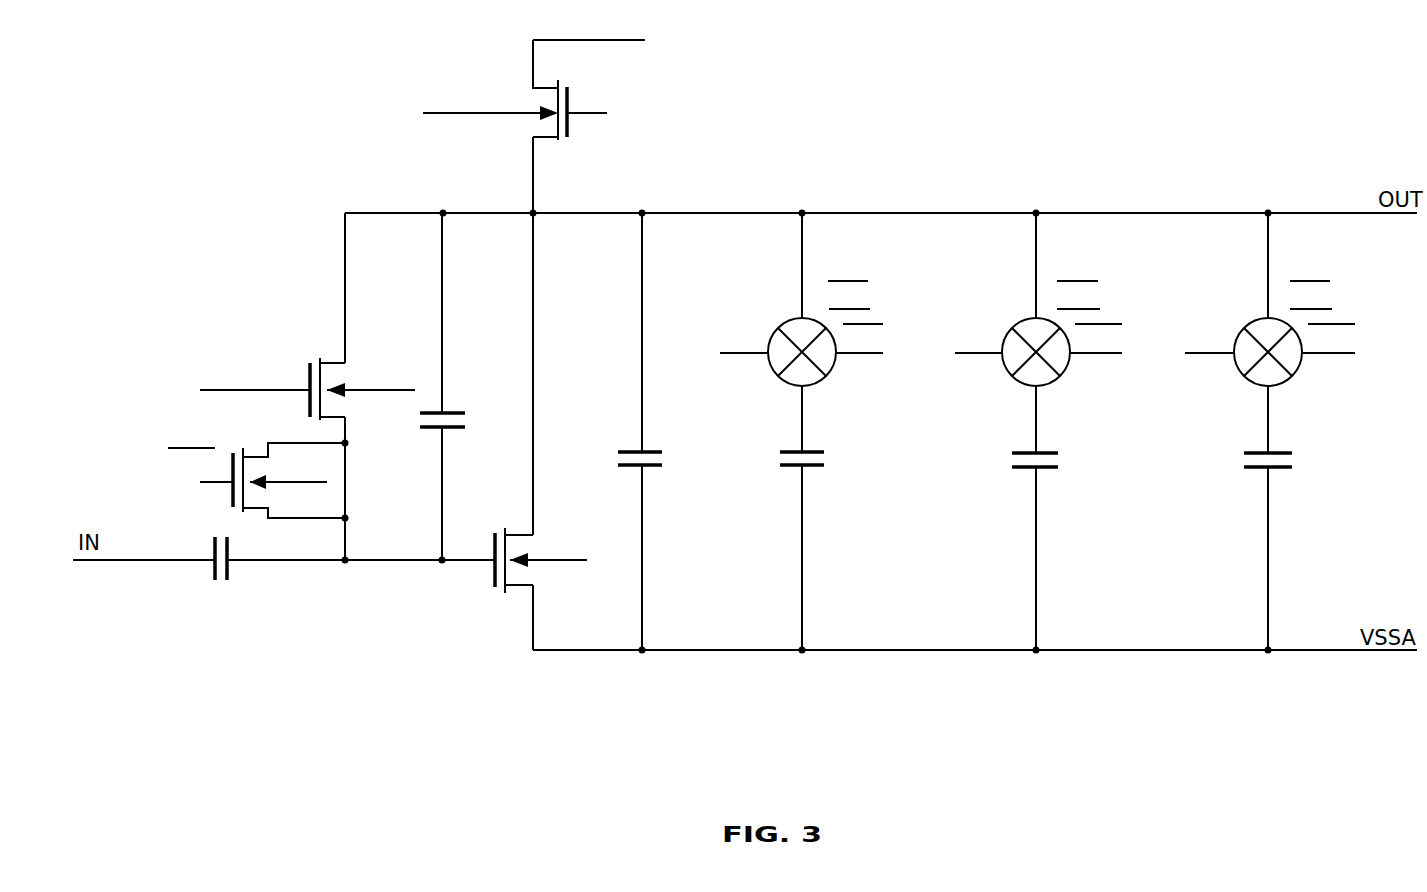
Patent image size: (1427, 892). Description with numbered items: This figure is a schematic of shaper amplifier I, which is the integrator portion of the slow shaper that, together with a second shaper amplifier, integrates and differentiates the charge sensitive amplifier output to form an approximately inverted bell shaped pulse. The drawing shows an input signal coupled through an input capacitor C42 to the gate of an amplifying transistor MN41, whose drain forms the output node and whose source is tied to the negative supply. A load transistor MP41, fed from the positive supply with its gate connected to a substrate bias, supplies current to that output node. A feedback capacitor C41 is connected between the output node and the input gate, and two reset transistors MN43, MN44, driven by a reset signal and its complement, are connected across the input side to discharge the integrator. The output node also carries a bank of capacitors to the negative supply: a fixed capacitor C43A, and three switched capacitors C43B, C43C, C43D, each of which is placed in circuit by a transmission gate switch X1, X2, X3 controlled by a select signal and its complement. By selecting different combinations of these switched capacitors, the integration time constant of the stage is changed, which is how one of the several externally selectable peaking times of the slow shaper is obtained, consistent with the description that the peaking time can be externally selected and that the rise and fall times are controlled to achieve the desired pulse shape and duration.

The PMOS transistor MP41 is at (534, 94).
The NMOS reset transistor MN43 is at (296, 446).
The NMOS reset transistor MN44 is at (256, 499).
The NMOS transistor MN41 is at (537, 548).
The capacitor 100f C41 is at (458, 386).
The input coupling capacitor 200f C42 is at (229, 588).
The capacitor 360f C43A is at (661, 431).
The capacitor 1.92p C43B is at (826, 518).
The capacitor 3.36p C43C is at (1057, 518).
The capacitor 24p C43D is at (1288, 518).
The transmission gate switch X1 is at (822, 299).
The transmission gate switch X2 is at (1055, 299).
The transmission gate switch X3 is at (1287, 299).